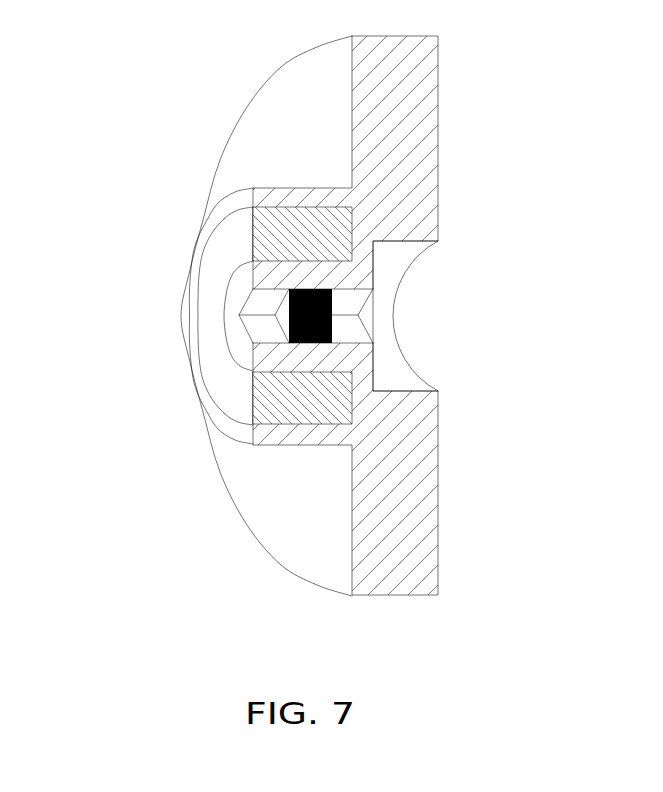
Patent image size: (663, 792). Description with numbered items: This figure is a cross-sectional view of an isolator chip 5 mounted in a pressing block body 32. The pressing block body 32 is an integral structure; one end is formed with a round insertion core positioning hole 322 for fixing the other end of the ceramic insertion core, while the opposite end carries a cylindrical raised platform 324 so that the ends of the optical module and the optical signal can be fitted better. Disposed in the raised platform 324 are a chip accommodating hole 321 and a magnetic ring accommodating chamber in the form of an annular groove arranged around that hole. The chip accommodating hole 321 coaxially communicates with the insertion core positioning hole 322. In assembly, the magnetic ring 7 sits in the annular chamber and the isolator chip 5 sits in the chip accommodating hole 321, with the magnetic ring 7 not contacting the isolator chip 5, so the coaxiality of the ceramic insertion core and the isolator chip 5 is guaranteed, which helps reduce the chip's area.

The pressing block body 32 is at (265, 517).
The chip accommodating hole 321 is at (262, 308).
The insertion core positioning hole 322 is at (395, 375).
The cylindrical raised platform 324 is at (185, 330).
The isolator chip 5 is at (285, 317).
The magnetic ring 7 is at (240, 243).